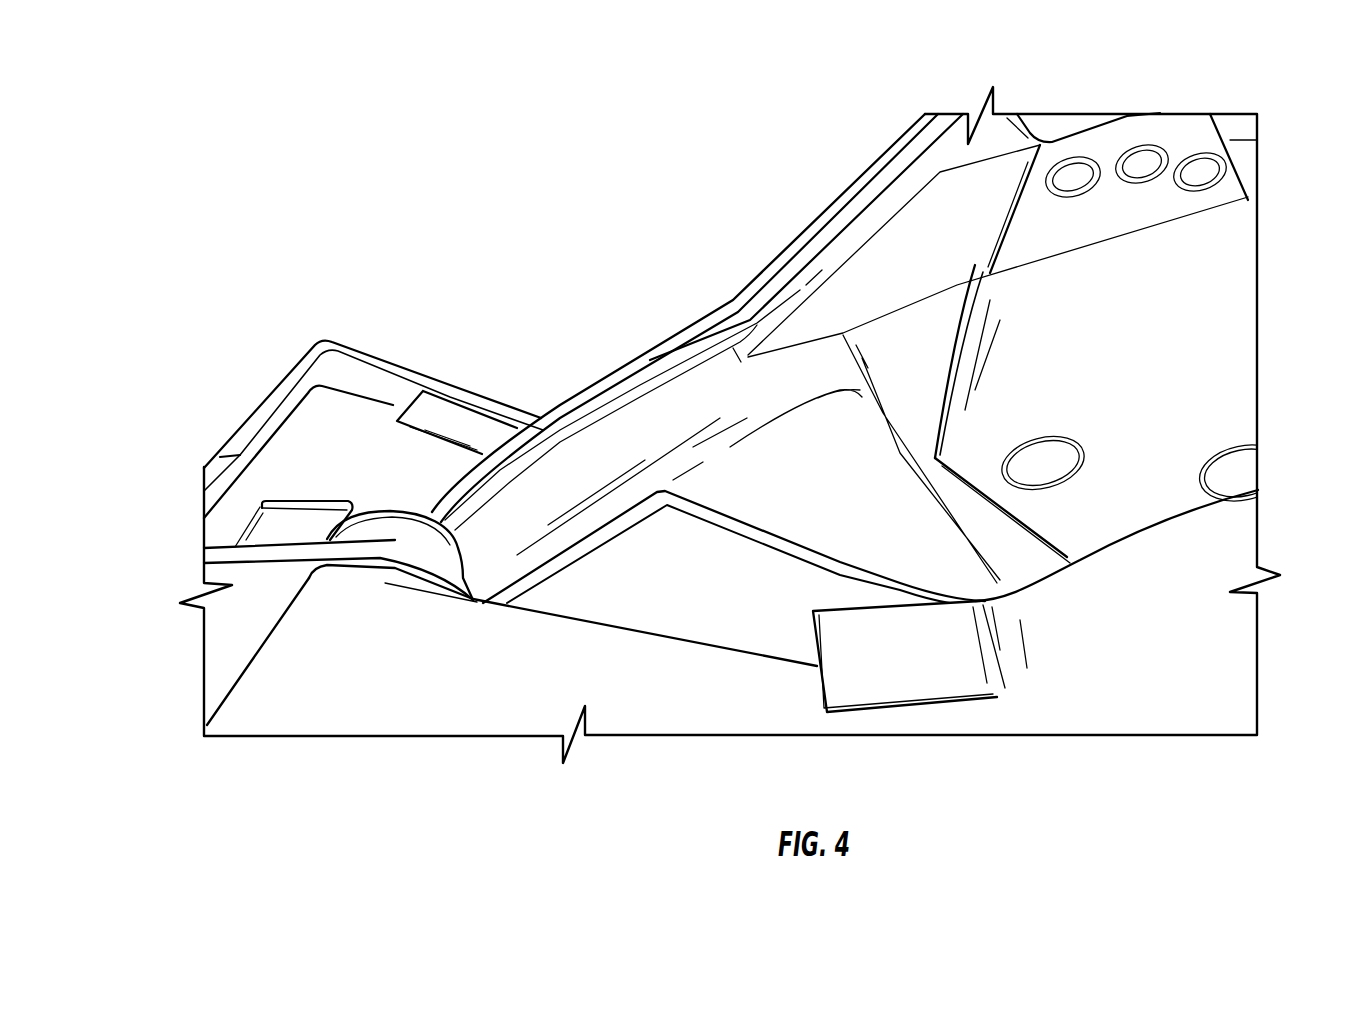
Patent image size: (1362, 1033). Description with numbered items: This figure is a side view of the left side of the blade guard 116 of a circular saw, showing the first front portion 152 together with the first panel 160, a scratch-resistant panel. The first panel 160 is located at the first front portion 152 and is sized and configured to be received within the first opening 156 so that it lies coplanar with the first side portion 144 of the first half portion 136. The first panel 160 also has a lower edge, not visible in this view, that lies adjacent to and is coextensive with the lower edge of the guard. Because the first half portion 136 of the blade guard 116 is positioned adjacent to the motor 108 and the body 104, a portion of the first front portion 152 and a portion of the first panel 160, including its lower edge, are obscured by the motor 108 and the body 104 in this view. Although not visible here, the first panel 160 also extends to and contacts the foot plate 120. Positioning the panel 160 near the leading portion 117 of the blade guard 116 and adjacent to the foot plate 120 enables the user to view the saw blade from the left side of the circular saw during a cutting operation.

The body 104 is at (635, 687).
The motor 108 is at (1180, 705).
The blade guard 116 is at (808, 176).
The leading portion 117 is at (513, 520).
The foot plate 120 is at (318, 453).
The first half portion 136 is at (1220, 268).
The first side portion 144 is at (1000, 432).
The first front portion 152 is at (780, 399).
The first opening 156 is at (643, 505).
The first panel 160 is at (607, 583).